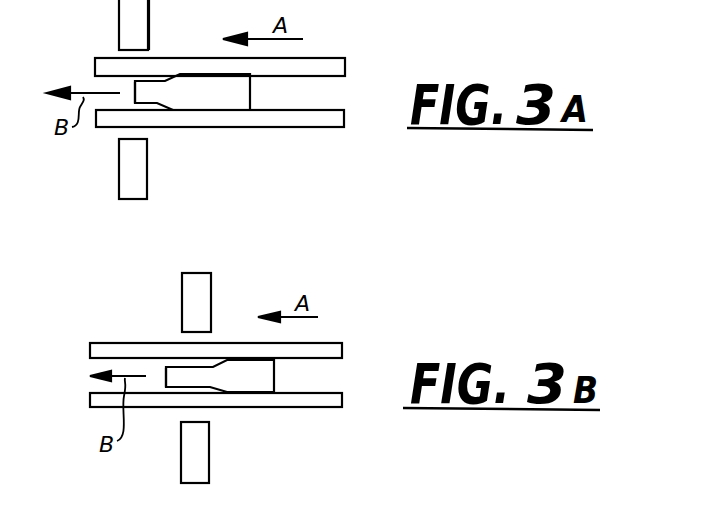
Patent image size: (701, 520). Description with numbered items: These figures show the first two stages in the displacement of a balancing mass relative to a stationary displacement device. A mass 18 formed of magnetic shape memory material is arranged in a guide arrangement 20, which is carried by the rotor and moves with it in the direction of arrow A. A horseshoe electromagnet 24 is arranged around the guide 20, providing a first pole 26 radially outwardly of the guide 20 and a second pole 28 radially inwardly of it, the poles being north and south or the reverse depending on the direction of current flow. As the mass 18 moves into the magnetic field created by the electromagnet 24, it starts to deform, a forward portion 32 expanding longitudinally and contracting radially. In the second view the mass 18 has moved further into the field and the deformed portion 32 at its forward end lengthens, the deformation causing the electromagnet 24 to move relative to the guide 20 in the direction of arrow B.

In FIG. 3A, the mass 18 is at (218, 100).
In FIG. 3B, the mass 18 is at (260, 384).
In FIG. 3A, the guide arrangement 20 is at (288, 118).
In FIG. 3B, the guide arrangement 20 is at (317, 403).
In FIG. 3A, the horseshoe electromagnet 24 is at (156, 19).
In FIG. 3A, the first pole 26 is at (119, 13).
In FIG. 3B, the first pole 26 is at (183, 298).
In FIG. 3A, the second pole 28 is at (120, 150).
In FIG. 3B, the second pole 28 is at (192, 462).
In FIG. 3A, the forward portion 32 is at (153, 94).
In FIG. 3B, the forward portion 32 is at (193, 379).